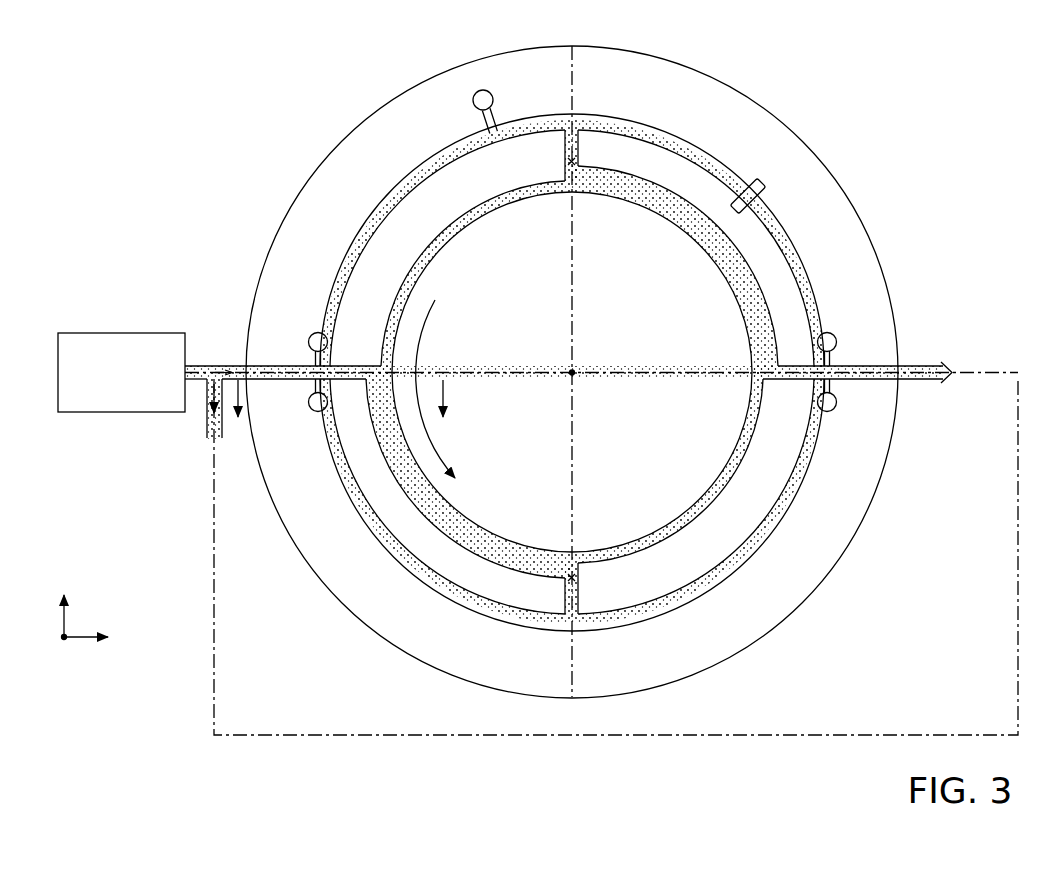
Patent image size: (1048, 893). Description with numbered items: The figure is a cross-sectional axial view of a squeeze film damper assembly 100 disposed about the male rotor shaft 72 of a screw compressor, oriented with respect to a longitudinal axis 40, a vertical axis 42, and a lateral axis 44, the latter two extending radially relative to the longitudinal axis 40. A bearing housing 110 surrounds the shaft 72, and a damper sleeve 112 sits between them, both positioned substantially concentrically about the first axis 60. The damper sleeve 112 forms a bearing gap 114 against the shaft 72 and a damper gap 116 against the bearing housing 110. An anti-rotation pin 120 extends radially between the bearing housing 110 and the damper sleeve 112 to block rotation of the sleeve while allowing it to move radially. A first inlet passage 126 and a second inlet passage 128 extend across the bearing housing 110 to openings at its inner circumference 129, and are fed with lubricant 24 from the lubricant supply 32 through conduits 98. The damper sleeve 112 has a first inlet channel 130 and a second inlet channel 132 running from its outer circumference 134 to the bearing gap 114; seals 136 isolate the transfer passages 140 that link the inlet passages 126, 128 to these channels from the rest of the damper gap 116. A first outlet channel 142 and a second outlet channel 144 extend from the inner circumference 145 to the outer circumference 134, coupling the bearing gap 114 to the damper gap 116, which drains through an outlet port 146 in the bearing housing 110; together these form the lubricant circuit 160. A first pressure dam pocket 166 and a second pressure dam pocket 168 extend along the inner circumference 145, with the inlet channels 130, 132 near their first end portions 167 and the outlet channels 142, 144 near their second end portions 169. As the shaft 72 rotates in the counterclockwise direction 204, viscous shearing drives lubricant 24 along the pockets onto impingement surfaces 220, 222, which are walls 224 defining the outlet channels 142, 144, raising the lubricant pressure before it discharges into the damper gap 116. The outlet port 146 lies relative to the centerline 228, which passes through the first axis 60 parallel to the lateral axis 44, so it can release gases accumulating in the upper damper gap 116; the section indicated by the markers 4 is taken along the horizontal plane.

The squeeze film damper assembly 100 is at (231, 123).
The bearing housing 110 is at (300, 235).
The damper sleeve 112 is at (400, 218).
The male rotor shaft 72 is at (470, 235).
The first pressure dam pocket 166 is at (456, 552).
The second pressure dam pocket 168 is at (752, 256).
The bearing gap 114 is at (690, 527).
The inner circumference 145 is at (703, 515).
The second outlet channel 144 is at (580, 128).
The first outlet channel 142 is at (580, 595).
The first inlet passage 126 is at (274, 366).
The second inlet passage 128 is at (862, 366).
The first inlet channel 130 is at (343, 366).
The second inlet channel 132 is at (806, 366).
The conduits 98 is at (209, 366).
The lubricant 24 is at (208, 392).
The section line 4- 4 is at (341, 415).
The transfer passages 140 is at (311, 388).
The seals 136 is at (316, 411).
The outlet port 146 is at (487, 90).
The anti-rotation pin 120 is at (762, 178).
The first axis 60 is at (575, 369).
The counterclockwise direction 204 is at (433, 296).
The lubricant circuit 160 is at (352, 538).
The first end portions 167 is at (386, 370).
The second end portions 169 is at (578, 181).
The impingement surface 222 is at (580, 160).
The walls 224 is at (571, 369).
The impingement surface 220 is at (563, 573).
The inner circumference 129 is at (634, 613).
The outer circumference 134 is at (664, 610).
The damper gap 116 is at (695, 596).
The centerline 228 is at (680, 374).
The lubricant supply 32 is at (120, 334).
The longitudinal axis 40 is at (65, 641).
The vertical axis 42 is at (67, 622).
The lateral axis 44 is at (85, 643).